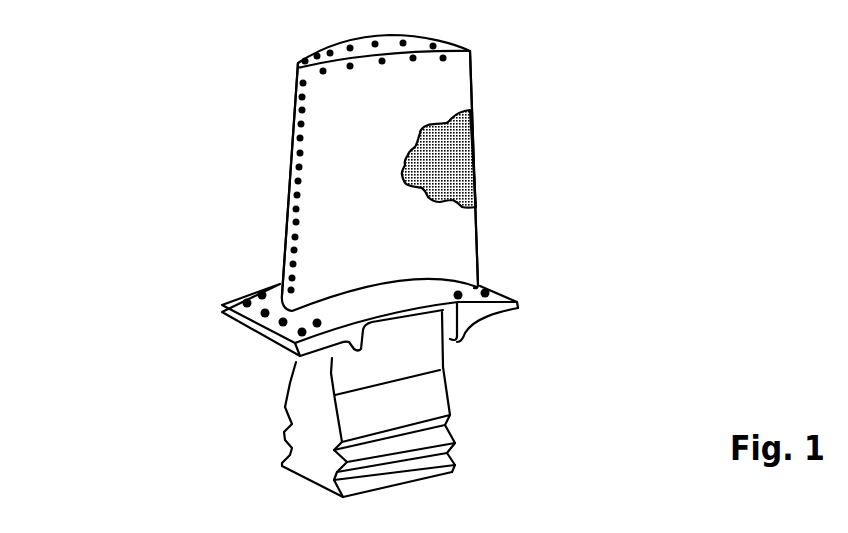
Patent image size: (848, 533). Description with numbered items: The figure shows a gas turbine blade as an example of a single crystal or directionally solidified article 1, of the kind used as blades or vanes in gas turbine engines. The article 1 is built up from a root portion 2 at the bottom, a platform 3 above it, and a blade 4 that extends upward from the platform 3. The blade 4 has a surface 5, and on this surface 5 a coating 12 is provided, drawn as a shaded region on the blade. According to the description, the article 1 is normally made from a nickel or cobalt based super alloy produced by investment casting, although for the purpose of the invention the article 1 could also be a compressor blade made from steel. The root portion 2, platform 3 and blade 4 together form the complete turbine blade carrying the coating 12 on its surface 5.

The article 1 is at (395, 266).
The root portion 2 is at (310, 440).
The platform 3 is at (242, 322).
The blade 4 is at (432, 80).
The surface 5 is at (432, 233).
The coating 12 is at (447, 158).